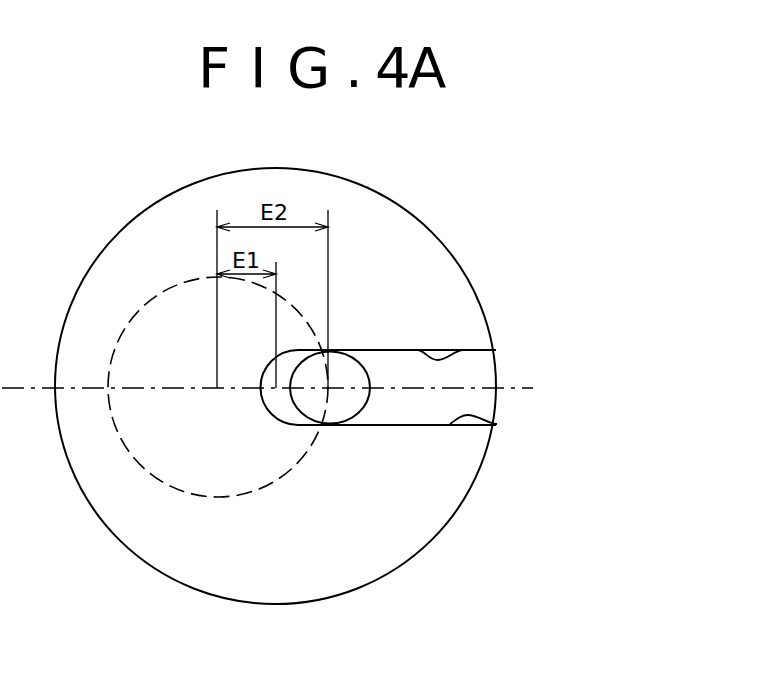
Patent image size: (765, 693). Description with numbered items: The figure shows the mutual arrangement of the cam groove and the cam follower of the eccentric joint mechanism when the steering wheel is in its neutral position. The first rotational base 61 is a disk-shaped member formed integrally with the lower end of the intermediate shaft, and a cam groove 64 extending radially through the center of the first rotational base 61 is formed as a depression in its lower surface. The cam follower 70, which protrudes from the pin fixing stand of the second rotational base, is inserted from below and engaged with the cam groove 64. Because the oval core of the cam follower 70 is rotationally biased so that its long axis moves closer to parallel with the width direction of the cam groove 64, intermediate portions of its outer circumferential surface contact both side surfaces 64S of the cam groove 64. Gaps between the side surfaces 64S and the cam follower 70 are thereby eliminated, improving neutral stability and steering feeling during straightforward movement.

The first rotational base 61 is at (422, 218).
The cam groove 64 is at (483, 374).
The side surfaces of the cam groove 64S is at (463, 350).
The cam follower 70 is at (368, 410).